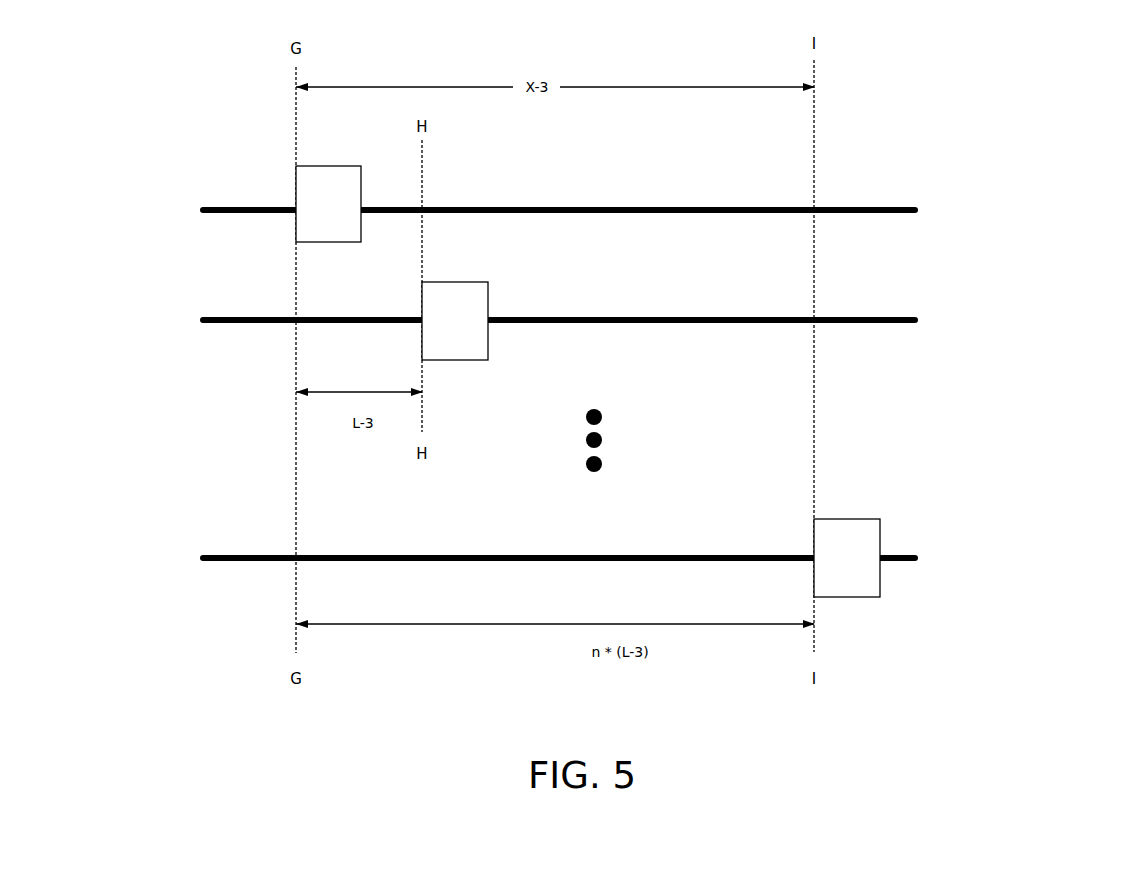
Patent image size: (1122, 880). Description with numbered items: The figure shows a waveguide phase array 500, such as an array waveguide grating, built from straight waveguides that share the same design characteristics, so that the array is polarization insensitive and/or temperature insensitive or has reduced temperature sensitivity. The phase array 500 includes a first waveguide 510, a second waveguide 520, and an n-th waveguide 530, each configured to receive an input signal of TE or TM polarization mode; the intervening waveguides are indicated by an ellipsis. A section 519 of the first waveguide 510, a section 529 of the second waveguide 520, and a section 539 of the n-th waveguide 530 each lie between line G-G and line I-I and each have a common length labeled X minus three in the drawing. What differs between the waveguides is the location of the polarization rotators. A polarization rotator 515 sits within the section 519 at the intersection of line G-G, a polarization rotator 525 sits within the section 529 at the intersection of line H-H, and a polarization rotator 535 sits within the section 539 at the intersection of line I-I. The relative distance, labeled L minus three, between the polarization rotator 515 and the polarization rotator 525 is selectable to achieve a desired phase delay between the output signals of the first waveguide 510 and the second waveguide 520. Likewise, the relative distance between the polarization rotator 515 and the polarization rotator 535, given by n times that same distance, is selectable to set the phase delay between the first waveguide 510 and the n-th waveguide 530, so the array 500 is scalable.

The waveguide phase array 500 is at (997, 70).
The first waveguide 510 is at (868, 210).
The second waveguide 520 is at (868, 320).
The n-th waveguide 530 is at (900, 555).
The polarization rotator 515 is at (328, 166).
The polarization rotator 525 is at (470, 282).
The polarization rotator 535 is at (858, 519).
The section of the first waveguide 519 is at (697, 171).
The section of the second waveguide 529 is at (681, 290).
The section of the n-th waveguide 539 is at (684, 537).